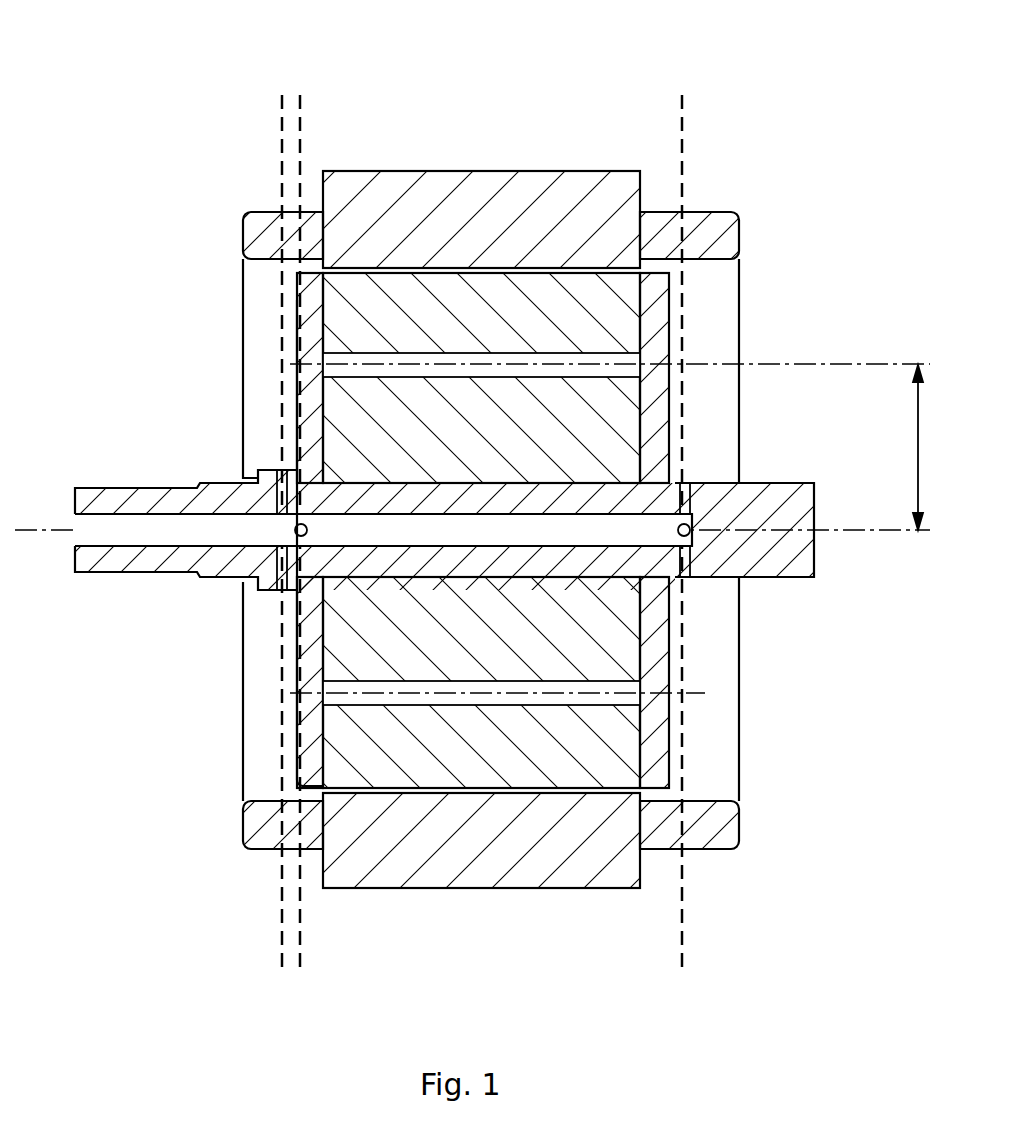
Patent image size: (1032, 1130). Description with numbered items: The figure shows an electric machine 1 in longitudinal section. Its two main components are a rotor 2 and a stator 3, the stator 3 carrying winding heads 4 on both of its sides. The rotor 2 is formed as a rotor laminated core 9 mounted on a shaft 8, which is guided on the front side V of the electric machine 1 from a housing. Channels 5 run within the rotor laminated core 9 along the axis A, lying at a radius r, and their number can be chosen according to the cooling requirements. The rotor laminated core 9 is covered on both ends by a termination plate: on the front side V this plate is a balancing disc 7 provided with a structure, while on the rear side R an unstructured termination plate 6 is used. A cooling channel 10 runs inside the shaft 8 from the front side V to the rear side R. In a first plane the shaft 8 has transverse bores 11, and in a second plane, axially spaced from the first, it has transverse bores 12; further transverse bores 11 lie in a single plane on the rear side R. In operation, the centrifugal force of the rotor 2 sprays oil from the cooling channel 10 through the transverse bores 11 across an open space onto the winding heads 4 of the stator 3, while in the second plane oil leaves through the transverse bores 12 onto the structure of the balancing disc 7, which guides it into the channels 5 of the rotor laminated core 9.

The electric machine 1 is at (481, 32).
The rotor 2 is at (493, 517).
The stator 3 is at (500, 213).
The winding heads 4 is at (695, 232).
The channels 5 is at (598, 366).
The termination plate 6 is at (660, 640).
The balancing disc 7 is at (293, 747).
The shaft 8 is at (435, 536).
The rotor laminated core 9 is at (372, 323).
The cooling channel 10 is at (137, 533).
The transverse bores 11 is at (280, 470).
The transverse bores 12 is at (296, 534).